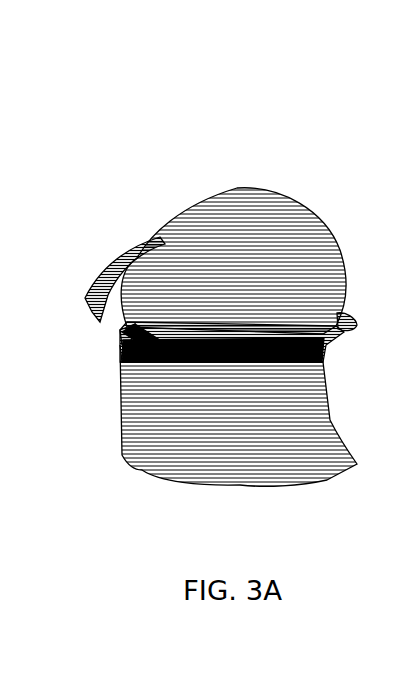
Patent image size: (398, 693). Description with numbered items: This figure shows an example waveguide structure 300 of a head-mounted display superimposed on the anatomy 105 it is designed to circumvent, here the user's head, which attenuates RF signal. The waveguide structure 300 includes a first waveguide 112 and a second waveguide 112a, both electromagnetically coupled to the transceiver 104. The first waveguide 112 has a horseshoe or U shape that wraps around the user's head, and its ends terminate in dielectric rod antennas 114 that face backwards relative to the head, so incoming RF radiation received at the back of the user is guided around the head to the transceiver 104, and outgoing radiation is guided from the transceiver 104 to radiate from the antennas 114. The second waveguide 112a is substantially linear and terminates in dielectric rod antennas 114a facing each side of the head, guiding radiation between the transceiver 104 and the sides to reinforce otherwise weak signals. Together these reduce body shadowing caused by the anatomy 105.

The waveguide structure 300 is at (160, 68).
The dielectric rod antenna 114 is at (343, 316).
The dielectric rod antenna 114a is at (87, 297).
The first waveguide 112 is at (316, 337).
The second waveguide 112a is at (120, 335).
The transceiver 104 is at (122, 345).
The anatomy 105 is at (143, 410).